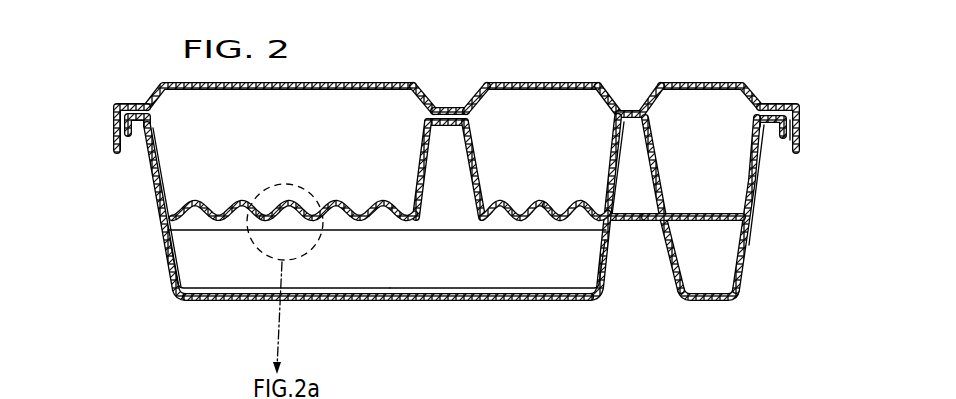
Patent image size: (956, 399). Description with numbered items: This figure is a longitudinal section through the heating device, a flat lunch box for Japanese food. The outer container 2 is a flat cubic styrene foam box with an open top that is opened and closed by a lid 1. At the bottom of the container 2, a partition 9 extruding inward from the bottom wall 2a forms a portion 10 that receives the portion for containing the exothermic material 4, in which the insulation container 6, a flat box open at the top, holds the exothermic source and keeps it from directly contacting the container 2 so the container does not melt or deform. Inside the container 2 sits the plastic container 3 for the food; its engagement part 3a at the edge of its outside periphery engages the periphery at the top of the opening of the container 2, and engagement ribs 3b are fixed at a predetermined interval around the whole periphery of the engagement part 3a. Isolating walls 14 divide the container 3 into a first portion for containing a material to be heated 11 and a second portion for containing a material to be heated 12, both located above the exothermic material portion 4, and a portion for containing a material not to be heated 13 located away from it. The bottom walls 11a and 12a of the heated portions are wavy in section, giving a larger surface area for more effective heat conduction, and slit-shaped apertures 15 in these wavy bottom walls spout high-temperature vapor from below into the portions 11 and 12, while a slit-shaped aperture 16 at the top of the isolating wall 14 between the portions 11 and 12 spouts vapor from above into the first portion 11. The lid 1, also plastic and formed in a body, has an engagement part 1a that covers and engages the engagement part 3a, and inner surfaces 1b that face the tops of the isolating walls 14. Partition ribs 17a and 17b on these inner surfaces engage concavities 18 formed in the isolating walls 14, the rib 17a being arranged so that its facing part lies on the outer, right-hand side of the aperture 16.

The lid 1 is at (152, 78).
The engagement part 1a is at (113, 113).
The inner surfaces 1b is at (150, 117).
The container 2 is at (150, 255).
The bottom wall 2a is at (500, 303).
The container 3 is at (413, 234).
The engagement part 3a is at (787, 143).
The engagement ribs 3b is at (133, 143).
The portion for containing the exothermic material 4 is at (170, 272).
The insulation container 6 is at (207, 268).
The partition 9 is at (643, 213).
The portion for containing the portion for containing the exothermic material 10 is at (247, 275).
The first portion for containing a material to be heated 11 is at (318, 159).
The bottom wall 11a is at (333, 215).
The second portion for containing a material to be heated 12 is at (572, 162).
The bottom wall 12a is at (540, 213).
The portion for containing a material not to be heated 13 is at (719, 195).
The isolating walls 14 is at (418, 140).
The slit-shaped apertures 15 is at (200, 203).
The slit-shaped aperture 16 is at (440, 112).
The partition rib 17a is at (450, 112).
The partition rib 17b is at (633, 110).
The concavities 18 is at (434, 112).